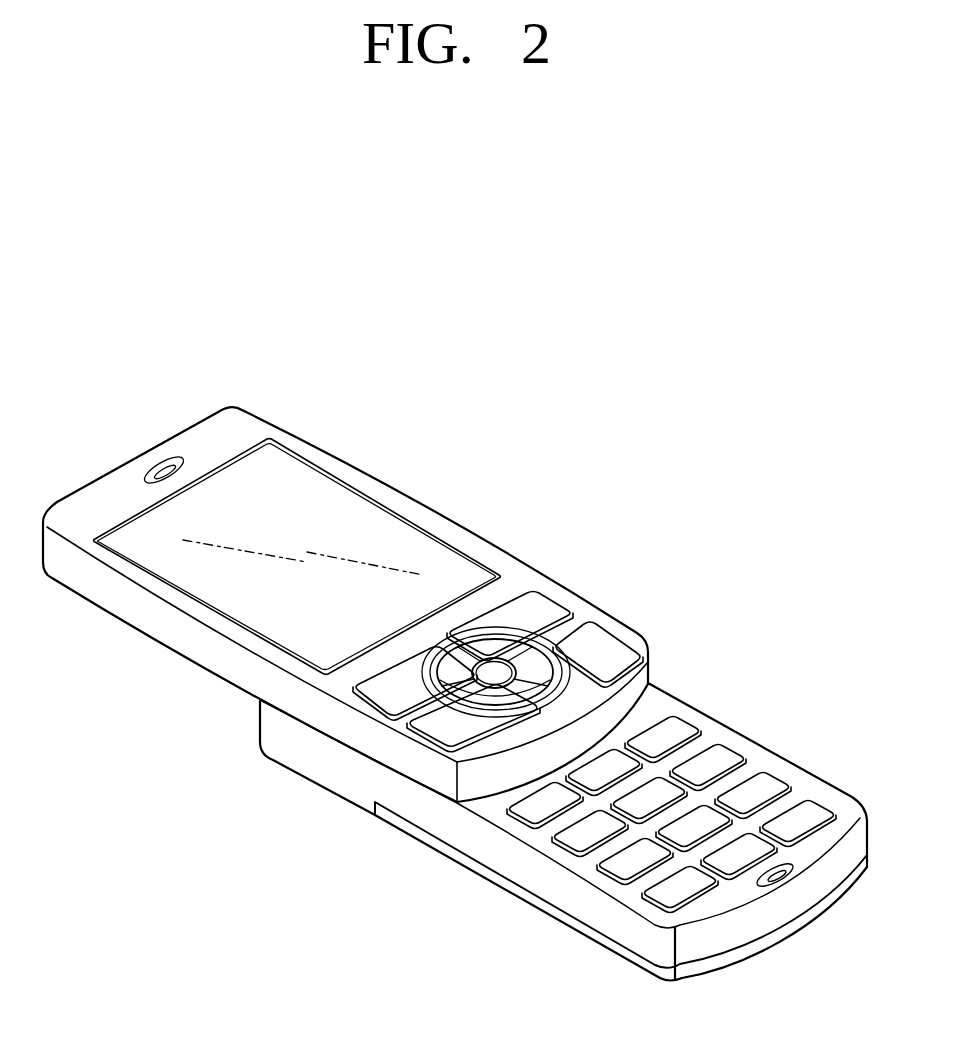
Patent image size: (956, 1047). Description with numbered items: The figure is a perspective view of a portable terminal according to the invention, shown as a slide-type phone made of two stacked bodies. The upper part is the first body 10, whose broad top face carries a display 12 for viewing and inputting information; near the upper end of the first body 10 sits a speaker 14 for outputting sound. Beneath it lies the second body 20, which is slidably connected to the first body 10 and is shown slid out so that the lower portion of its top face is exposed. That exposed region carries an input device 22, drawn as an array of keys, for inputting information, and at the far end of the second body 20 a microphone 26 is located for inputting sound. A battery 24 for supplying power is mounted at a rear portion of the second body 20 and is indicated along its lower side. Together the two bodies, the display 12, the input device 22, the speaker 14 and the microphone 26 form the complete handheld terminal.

The first body 10 is at (453, 510).
The display 12 is at (357, 503).
The speaker 14 is at (162, 468).
The second body 20 is at (703, 706).
The input device 22 is at (723, 757).
The battery 24 is at (477, 870).
The microphone 26 is at (780, 877).